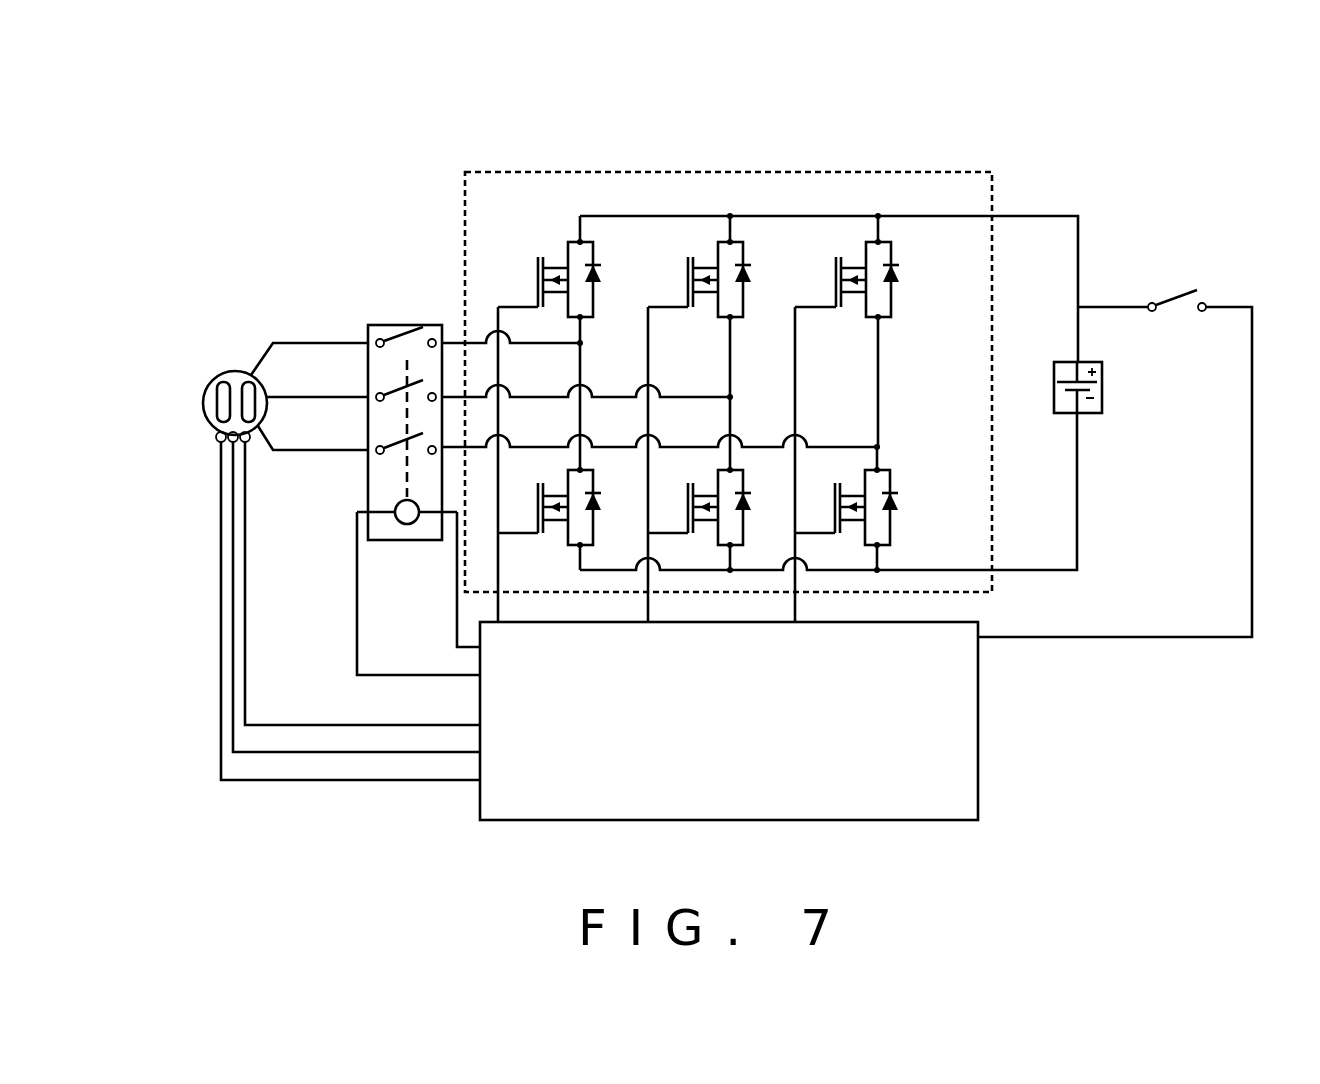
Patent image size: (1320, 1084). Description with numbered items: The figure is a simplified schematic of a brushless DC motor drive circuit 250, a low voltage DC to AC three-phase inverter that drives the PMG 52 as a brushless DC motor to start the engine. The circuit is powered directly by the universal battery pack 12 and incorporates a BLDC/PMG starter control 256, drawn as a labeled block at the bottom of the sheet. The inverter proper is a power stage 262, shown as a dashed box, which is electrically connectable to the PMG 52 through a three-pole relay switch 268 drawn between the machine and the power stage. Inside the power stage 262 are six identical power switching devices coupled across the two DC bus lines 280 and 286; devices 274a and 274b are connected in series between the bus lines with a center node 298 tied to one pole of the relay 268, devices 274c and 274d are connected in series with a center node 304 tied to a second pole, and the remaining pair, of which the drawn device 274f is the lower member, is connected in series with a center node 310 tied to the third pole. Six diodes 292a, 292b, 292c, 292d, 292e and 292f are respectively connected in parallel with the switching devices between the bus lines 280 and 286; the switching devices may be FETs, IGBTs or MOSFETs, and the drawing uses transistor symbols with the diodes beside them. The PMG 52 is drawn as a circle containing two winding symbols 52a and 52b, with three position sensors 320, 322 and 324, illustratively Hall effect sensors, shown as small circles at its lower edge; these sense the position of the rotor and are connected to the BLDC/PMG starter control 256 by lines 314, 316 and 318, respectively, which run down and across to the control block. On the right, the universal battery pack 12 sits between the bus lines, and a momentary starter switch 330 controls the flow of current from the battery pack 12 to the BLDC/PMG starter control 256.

The universal battery pack 12 is at (1102, 382).
The PMG 52 is at (210, 380).
The motor winding 52a is at (220, 370).
The motor winding 52b is at (257, 417).
The brushless DC motor drive circuit 250 is at (940, 125).
The BLDC/PMG starter control 256 is at (978, 742).
The power stage 262 is at (570, 172).
The 3-pole relay switch 268 is at (423, 323).
The power switching device 274a is at (538, 275).
The power switching device 274b is at (538, 507).
The power switching device 274c is at (688, 505).
The power switching device 274d is at (688, 277).
The power switching device 274f is at (836, 278).
The DC bus line 280 is at (1023, 215).
The DC bus line 286 is at (1052, 568).
The diode 292a is at (602, 274).
The diode 292b is at (601, 503).
The diode 292c is at (752, 503).
The diode 292d is at (752, 274).
The diode 292e is at (900, 272).
The diode 292f is at (898, 504).
The center node 298 is at (577, 347).
The center node 304 is at (730, 395).
The center node 310 is at (873, 445).
The line 314 is at (218, 632).
The line 316 is at (232, 667).
The line 318 is at (245, 703).
The position sensor 320 is at (215, 437).
The position sensor 322 is at (226, 446).
The position sensor 324 is at (250, 442).
The momentary starter switch 330 is at (1115, 433).